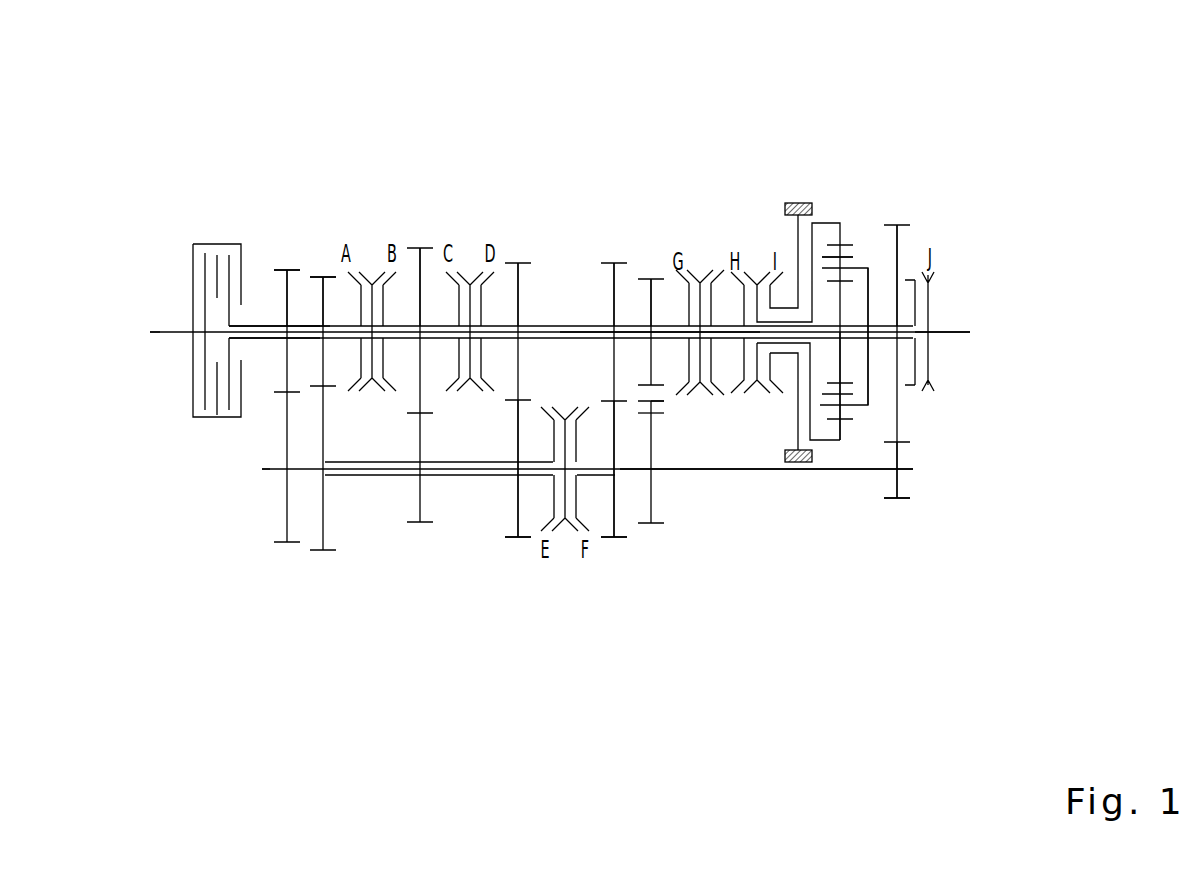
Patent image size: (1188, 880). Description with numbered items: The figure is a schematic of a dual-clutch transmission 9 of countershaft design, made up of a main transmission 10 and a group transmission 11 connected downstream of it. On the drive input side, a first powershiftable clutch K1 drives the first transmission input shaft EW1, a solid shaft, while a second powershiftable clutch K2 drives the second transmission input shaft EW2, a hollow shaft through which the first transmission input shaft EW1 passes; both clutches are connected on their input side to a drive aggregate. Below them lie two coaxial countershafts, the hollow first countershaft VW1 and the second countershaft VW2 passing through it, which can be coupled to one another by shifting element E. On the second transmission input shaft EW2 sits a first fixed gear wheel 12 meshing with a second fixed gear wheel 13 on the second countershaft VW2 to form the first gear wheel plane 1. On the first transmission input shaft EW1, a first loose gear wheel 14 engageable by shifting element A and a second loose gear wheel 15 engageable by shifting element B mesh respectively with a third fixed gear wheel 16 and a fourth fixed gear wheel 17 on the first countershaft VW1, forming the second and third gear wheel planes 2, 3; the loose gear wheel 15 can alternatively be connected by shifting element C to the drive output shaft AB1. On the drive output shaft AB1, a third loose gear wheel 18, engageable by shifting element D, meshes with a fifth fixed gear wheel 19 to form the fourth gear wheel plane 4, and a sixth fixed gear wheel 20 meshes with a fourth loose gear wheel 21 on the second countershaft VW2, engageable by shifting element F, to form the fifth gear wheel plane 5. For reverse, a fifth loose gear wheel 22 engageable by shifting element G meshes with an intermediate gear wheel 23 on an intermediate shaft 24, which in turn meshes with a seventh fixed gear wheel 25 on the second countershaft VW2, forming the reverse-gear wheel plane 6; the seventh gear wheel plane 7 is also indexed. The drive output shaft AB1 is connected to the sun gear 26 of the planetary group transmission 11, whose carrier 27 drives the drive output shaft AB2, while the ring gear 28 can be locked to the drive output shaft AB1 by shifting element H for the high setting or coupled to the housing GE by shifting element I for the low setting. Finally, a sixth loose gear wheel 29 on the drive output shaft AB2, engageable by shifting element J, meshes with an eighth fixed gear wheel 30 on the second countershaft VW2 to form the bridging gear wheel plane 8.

The first powershiftable clutch K1 is at (198, 236).
The second powershiftable clutch K2 is at (227, 236).
The first fixed gear wheel 12 is at (284, 290).
The first transmission input shaft EW1 is at (301, 326).
The second transmission input shaft EW2 is at (263, 338).
The first loose gear wheel 14 is at (338, 295).
The second loose gear wheel 15 is at (421, 268).
The main transmission 10 is at (454, 180).
The third loose gear wheel 18 is at (518, 296).
The drive output shaft of the main transmission AB1 is at (563, 328).
The sixth fixed gear wheel 20 is at (618, 296).
The fifth loose gear wheel 22 is at (660, 296).
The housing GE is at (794, 203).
The ring gear 28 is at (833, 245).
The carrier 27 is at (863, 262).
The group transmission 11 is at (871, 168).
The sixth loose gear wheel 29 is at (902, 247).
The first gear wheel plane 1 is at (287, 258).
The second gear wheel plane 2 is at (322, 266).
The third gear wheel plane 3 is at (420, 238).
The fourth gear wheel plane 4 is at (518, 253).
The fifth gear wheel plane 5 is at (614, 253).
The sixth, reverse-gear wheel plane 6 is at (651, 268).
The seventh gear wheel plane 7 is at (840, 214).
The bridging gear wheel plane 8 is at (898, 214).
The dual-clutch transmission 9 is at (220, 550).
The second fixed gear wheel 13 is at (287, 507).
The third fixed gear wheel 16 is at (323, 530).
The first countershaft VW1 is at (372, 476).
The second countershaft VW2 is at (767, 470).
The fourth fixed gear wheel 17 is at (422, 500).
The fifth fixed gear wheel 19 is at (517, 507).
The fourth loose gear wheel 21 is at (613, 513).
The seventh fixed gear wheel 25 is at (650, 500).
The intermediate gear wheel 23 is at (664, 413).
The intermediate shaft 24 is at (664, 402).
The drive output shaft of the group transmission AB2 is at (962, 328).
The sun gear 26 is at (842, 360).
The eighth fixed gear wheel 30 is at (897, 483).